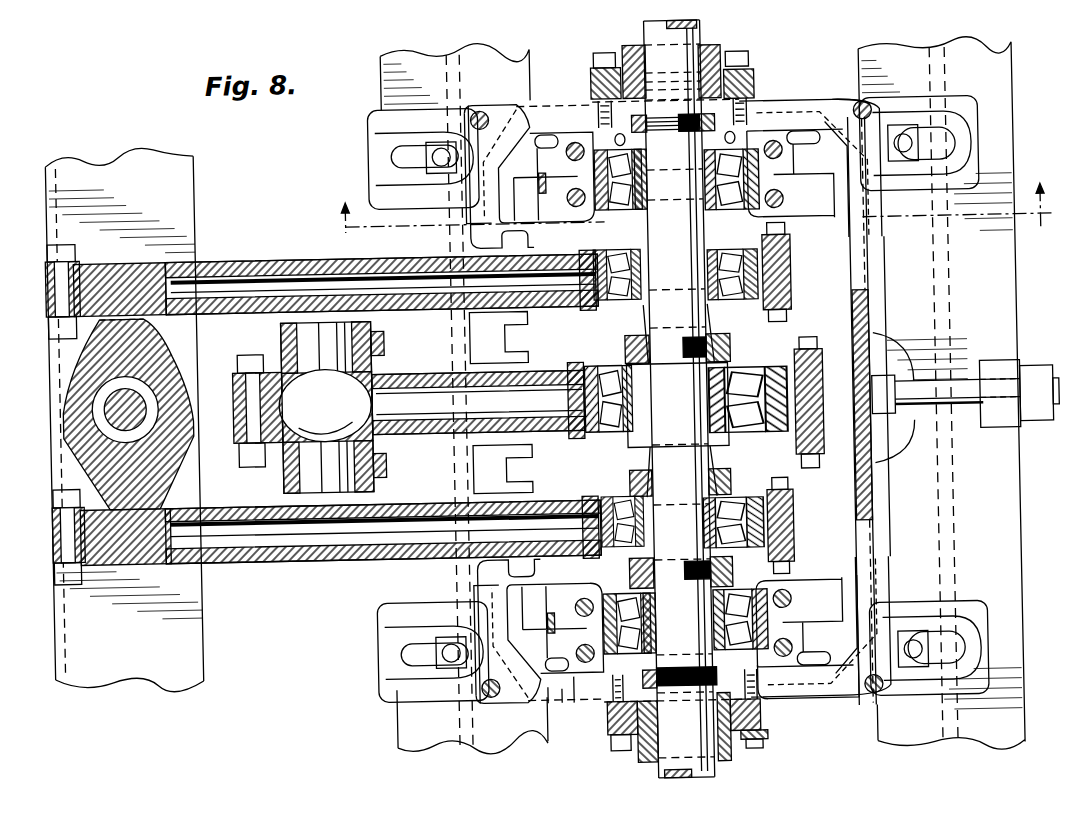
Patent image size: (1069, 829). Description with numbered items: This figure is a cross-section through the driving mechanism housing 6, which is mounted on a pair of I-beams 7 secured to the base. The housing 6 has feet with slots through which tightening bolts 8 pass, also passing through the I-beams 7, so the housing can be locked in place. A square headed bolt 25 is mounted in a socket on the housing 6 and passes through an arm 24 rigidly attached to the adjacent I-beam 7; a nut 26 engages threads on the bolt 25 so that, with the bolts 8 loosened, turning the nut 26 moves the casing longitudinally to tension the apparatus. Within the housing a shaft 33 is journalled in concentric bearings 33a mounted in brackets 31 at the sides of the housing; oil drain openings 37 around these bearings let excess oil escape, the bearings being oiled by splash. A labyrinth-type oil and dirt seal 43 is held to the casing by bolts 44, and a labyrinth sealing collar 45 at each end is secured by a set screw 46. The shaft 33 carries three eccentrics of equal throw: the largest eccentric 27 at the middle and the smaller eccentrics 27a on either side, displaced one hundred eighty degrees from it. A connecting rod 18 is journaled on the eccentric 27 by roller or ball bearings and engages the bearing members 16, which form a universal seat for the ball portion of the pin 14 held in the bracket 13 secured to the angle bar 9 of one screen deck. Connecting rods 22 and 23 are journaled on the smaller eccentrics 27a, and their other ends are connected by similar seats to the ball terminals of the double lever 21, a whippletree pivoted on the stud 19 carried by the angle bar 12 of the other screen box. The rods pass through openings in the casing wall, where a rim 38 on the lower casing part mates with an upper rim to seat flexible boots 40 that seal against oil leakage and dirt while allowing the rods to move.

The driving mechanism housing 6 is at (822, 116).
The I-beams 7 is at (966, 80).
The tightening bolts 8 is at (905, 183).
The angle bar 9 is at (688, 209).
The angle bar 12 is at (191, 198).
The bracket 13 is at (376, 353).
The pin 14 is at (326, 408).
The bearing members 16 is at (260, 461).
The connecting rod 18 is at (558, 382).
The stud 19 is at (110, 414).
The lever 21 is at (150, 340).
The connecting rod 22 is at (309, 267).
The connecting rod 23 is at (238, 568).
The arm 24 is at (984, 441).
The square headed bolt 25 is at (968, 394).
The nut 26 is at (1036, 396).
The eccentric 27 is at (740, 445).
The eccentrics 27a is at (738, 317).
The brackets 31 is at (787, 228).
The shaft 33 is at (701, 45).
The bearings 33a is at (783, 182).
The oil drain openings 37 is at (560, 709).
The rim 38 is at (524, 254).
The flexible boots 40 is at (466, 346).
The oil and dirt seal 43 is at (748, 742).
The bolts 44 is at (758, 755).
The labyrinth sealing collar 45 is at (624, 762).
The set screw 46 is at (739, 766).